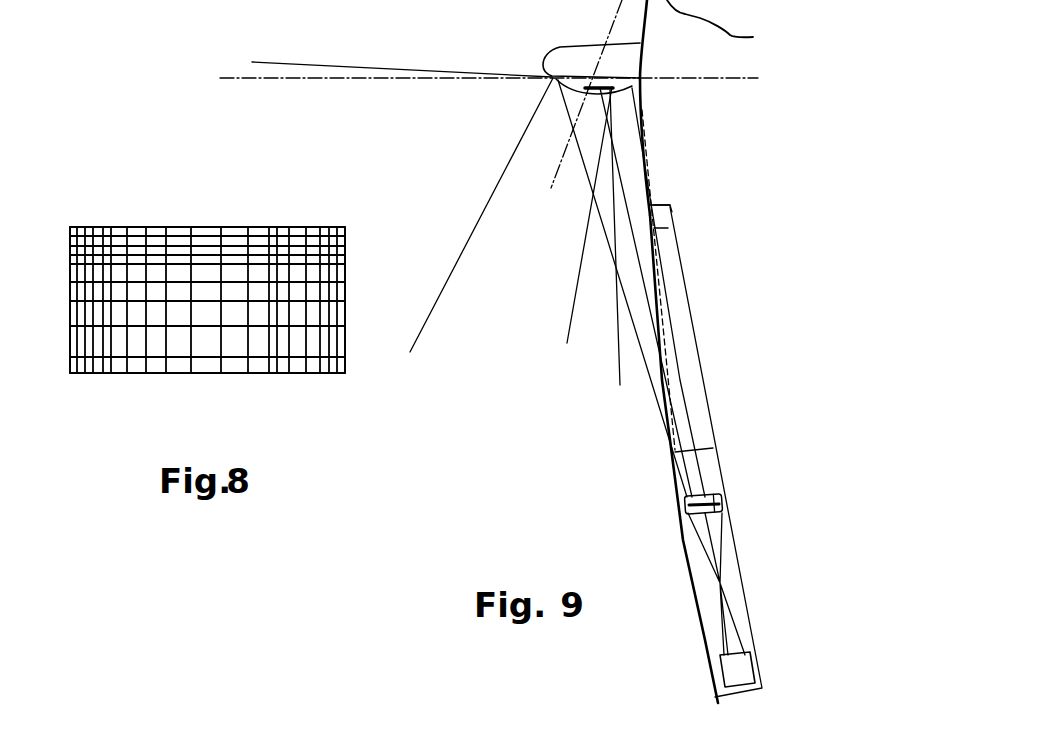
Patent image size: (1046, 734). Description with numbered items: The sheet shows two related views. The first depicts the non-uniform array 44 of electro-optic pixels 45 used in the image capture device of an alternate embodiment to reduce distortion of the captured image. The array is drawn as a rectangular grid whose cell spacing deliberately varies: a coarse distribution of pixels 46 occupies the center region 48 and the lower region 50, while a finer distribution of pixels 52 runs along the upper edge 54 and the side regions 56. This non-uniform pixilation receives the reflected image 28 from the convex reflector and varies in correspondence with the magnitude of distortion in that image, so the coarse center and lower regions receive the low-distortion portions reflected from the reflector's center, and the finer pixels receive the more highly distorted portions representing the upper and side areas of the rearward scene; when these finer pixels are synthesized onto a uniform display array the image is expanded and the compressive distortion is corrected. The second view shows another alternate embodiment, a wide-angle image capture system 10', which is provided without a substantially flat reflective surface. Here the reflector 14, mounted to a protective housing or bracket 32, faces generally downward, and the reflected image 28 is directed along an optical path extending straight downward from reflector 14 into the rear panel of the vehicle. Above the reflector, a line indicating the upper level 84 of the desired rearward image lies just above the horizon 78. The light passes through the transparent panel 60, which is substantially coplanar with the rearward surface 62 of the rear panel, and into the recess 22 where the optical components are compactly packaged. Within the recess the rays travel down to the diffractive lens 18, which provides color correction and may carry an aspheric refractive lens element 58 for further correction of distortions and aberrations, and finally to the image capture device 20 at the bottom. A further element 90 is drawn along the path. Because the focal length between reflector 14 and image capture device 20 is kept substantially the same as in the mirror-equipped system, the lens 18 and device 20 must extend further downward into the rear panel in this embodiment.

In FIG. 8, the non-uniform array 44 is at (53, 197).
In FIG. 8, the upper edge 54 is at (213, 228).
In FIG. 8, the finer distribution of pixels 52 is at (277, 237).
In FIG. 8, the side regions 56 is at (72, 273).
In FIG. 8, the electro-optic pixels 45 is at (103, 310).
In FIG. 8, the center region 48 is at (202, 293).
In FIG. 8, the lower region 50 is at (208, 367).
In FIG. 8, the coarse distribution of pixels 46 is at (258, 343).
In FIG. 9, the wide-angle image capture system 10' is at (697, 107).
In FIG. 9, the upper level 84 is at (381, 68).
In FIG. 9, the horizon 78 is at (390, 78).
In FIG. 9, the protective housing or bracket 32 is at (577, 55).
In FIG. 9, the reflector 14 is at (560, 97).
In FIG. 9, the reflected image 28 is at (679, 355).
In FIG. 9, the rearward surface 62 is at (675, 488).
In FIG. 9, the recess 22 is at (673, 283).
In FIG. 9, the transparent panel 60 is at (653, 228).
In FIG. 9, the filter 90 is at (700, 450).
In FIG. 9, the diffractive lens 18 is at (723, 497).
In FIG. 9, the aspheric refractive lens element 58 is at (725, 506).
In FIG. 9, the image capture device 20 is at (743, 673).